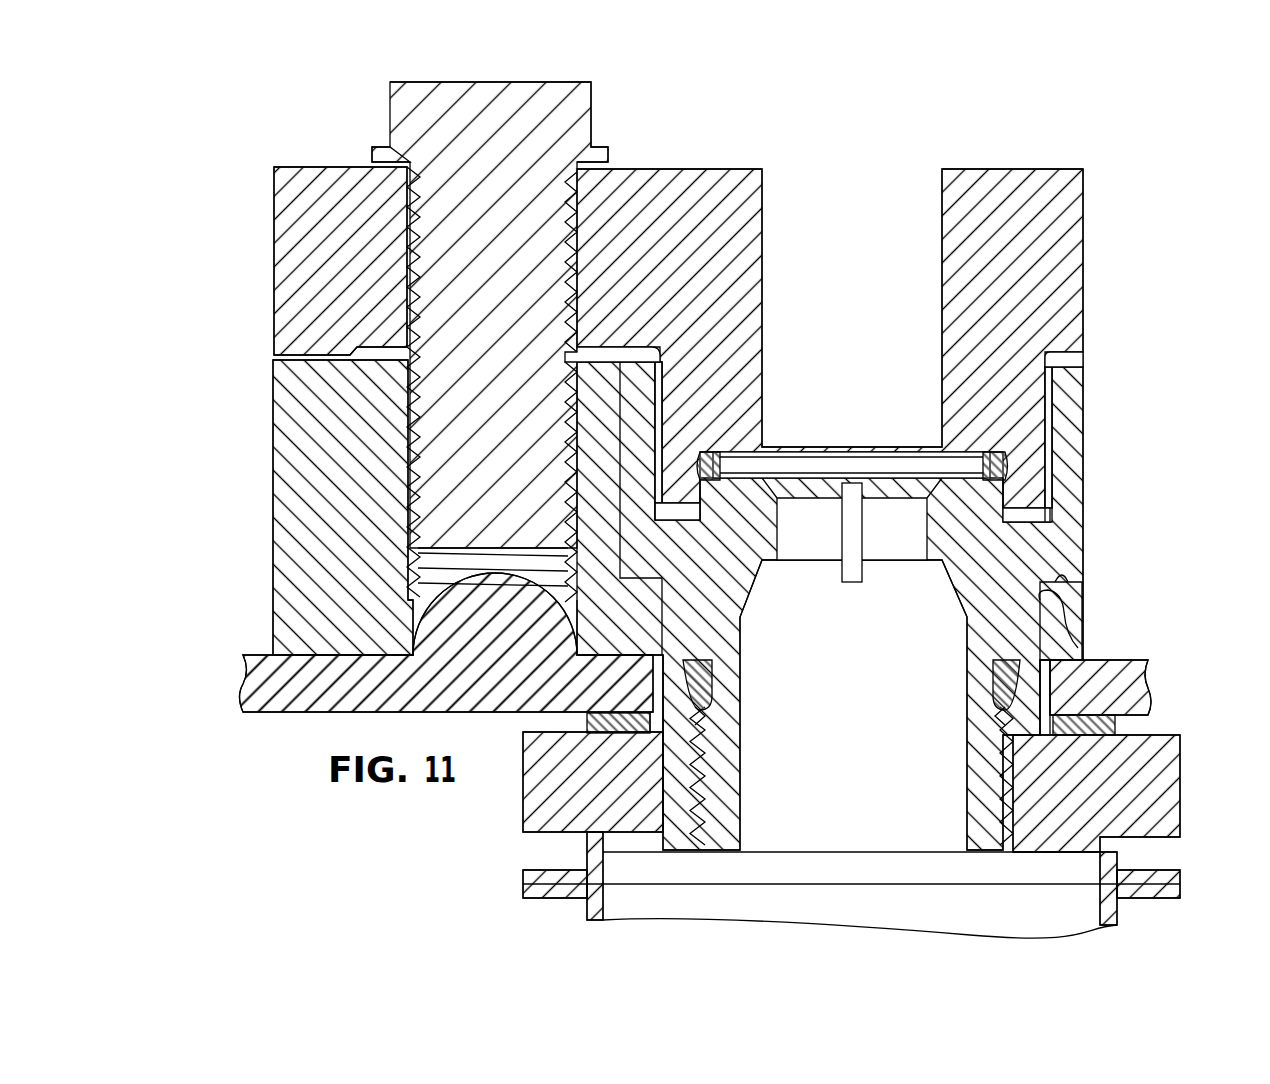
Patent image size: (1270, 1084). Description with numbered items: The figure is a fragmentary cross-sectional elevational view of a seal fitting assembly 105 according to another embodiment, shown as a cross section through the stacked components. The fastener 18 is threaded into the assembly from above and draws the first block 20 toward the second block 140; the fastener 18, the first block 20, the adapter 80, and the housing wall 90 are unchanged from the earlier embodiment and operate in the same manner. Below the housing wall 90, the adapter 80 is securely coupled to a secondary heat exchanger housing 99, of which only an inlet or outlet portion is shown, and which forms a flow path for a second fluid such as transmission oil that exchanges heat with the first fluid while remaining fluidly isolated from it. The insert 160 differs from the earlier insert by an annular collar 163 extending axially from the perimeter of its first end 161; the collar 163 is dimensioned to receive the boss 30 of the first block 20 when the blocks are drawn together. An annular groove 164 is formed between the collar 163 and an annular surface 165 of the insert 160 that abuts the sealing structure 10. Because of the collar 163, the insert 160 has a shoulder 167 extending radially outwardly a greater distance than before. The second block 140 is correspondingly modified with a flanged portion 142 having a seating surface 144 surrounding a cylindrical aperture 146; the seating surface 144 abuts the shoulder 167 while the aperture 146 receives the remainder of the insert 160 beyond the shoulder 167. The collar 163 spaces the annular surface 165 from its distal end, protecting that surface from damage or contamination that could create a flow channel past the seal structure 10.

The seal fitting assembly 105 is at (1152, 148).
The fastener 18 is at (598, 127).
The first block 20 is at (268, 243).
The second block 140 is at (268, 522).
The insert 160 is at (1087, 549).
The boss 30 is at (887, 404).
The annular collar 163 is at (1088, 360).
The annular groove 164 is at (1030, 521).
The sealing structure 10 is at (918, 442).
The first end 161 is at (937, 487).
The annular surface 165 is at (945, 471).
The seating surface 144 is at (1060, 600).
The cylindrical aperture 146 is at (1085, 645).
The shoulder 167 is at (1087, 584).
The flanged portion 142 is at (1085, 654).
The housing wall 90 is at (1135, 690).
The adapter 80 is at (520, 815).
The secondary heat exchanger housing 99 is at (520, 885).